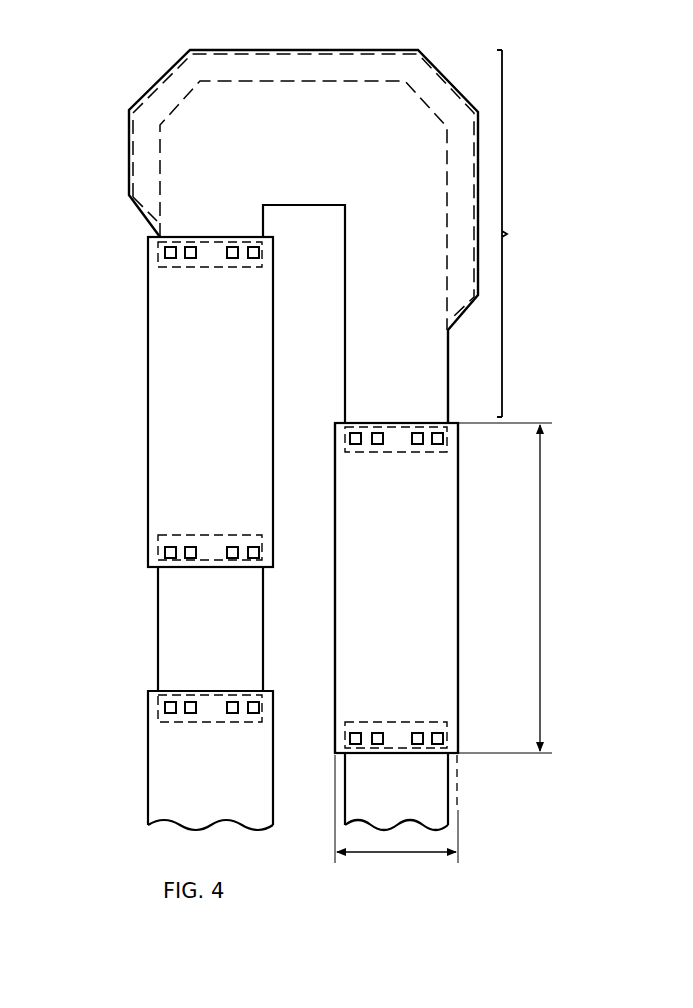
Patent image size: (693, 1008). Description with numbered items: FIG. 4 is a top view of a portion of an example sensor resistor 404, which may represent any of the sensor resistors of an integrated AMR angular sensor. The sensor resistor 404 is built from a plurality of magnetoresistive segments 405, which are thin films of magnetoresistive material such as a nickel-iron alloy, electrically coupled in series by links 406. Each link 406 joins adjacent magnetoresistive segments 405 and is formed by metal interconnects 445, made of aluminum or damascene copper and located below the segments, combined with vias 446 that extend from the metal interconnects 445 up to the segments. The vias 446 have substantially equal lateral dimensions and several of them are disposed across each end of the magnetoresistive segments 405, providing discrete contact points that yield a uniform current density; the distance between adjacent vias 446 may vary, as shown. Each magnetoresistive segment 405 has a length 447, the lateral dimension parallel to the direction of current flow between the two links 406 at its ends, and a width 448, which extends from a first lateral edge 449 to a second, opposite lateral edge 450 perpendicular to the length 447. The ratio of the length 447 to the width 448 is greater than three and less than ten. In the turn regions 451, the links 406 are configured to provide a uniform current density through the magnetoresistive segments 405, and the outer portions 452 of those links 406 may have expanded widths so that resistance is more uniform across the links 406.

The sensor resistor 404 is at (573, 98).
The magnetoresistive segments 405 is at (150, 400).
The links 406 is at (158, 79).
The metal interconnects 445 is at (128, 152).
The vias 446 is at (190, 246).
The length 447 is at (541, 581).
The width 448 is at (400, 855).
The first lateral edge 449 is at (339, 565).
The second lateral edge 450 is at (456, 608).
The turn regions 451 is at (526, 233).
The outer portions 452 is at (427, 104).